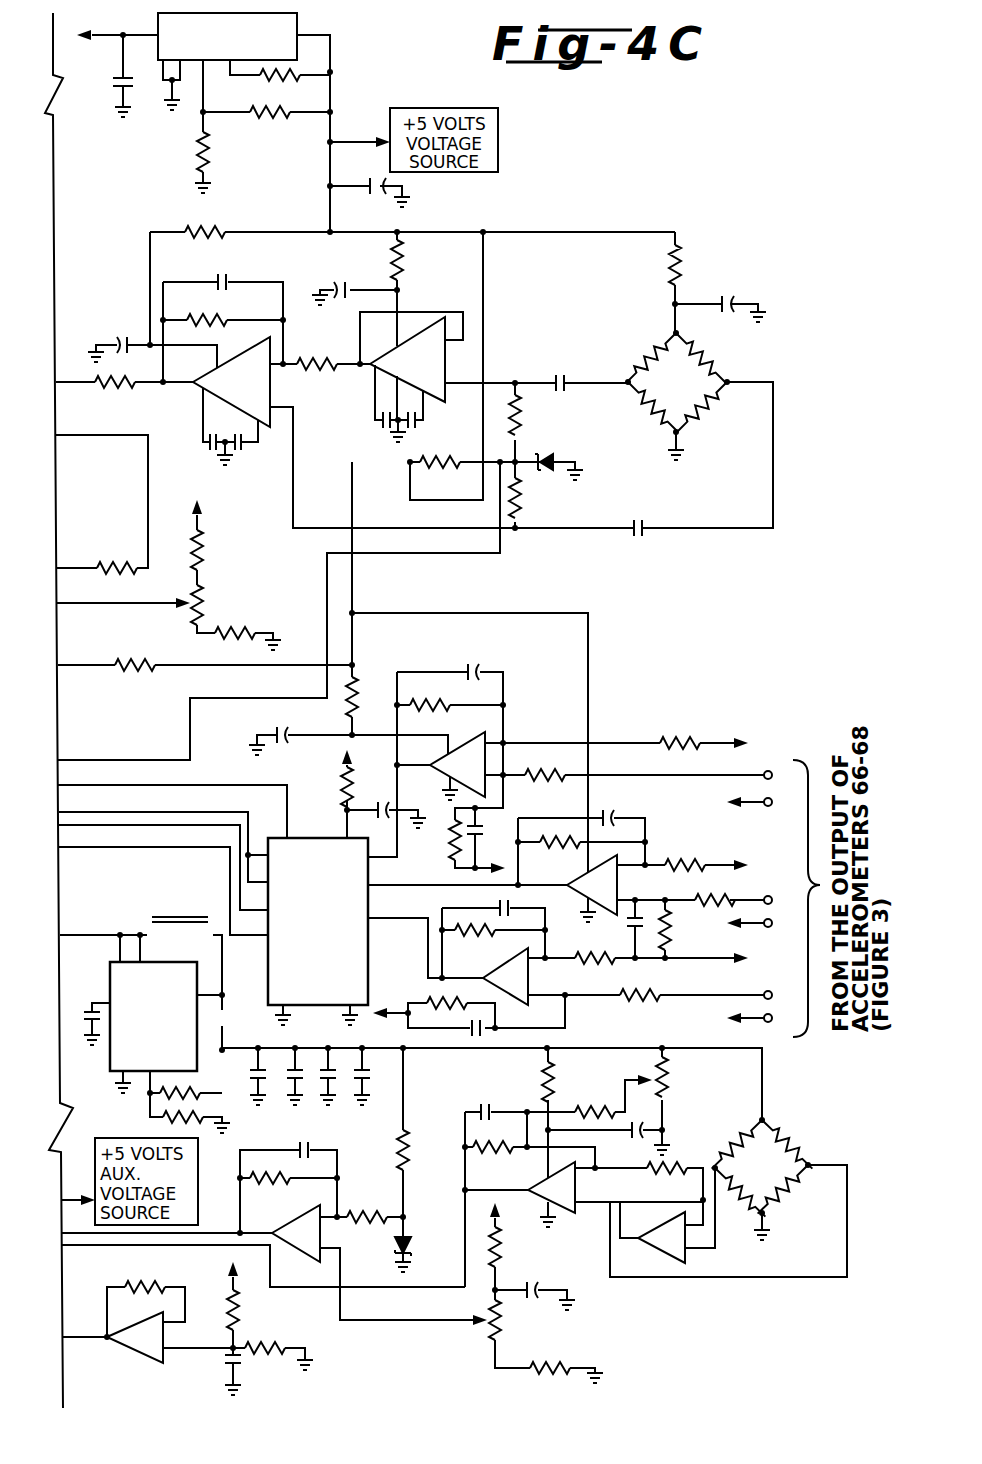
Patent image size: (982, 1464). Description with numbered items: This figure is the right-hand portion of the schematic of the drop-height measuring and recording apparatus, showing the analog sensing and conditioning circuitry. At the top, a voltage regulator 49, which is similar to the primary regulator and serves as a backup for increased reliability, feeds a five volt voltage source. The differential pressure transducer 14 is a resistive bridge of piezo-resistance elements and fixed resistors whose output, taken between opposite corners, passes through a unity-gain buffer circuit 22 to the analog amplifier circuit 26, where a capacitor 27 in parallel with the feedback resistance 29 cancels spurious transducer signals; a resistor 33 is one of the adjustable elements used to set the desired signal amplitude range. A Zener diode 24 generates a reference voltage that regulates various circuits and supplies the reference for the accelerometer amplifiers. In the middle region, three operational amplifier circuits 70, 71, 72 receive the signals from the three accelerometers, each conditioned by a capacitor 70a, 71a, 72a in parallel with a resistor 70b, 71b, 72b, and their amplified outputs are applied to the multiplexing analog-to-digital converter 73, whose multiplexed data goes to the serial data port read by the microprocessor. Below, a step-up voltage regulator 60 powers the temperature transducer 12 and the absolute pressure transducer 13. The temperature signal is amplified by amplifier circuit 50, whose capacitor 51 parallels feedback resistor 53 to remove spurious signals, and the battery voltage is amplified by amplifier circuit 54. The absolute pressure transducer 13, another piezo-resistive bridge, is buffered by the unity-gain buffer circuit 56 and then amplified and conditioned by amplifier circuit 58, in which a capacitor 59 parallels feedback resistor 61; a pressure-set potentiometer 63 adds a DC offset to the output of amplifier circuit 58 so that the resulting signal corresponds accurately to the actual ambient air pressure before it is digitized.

The voltage regulator 49 is at (333, 24).
The capacitor 27 is at (226, 280).
The feedback resistance 29 is at (210, 318).
The analog amplifier circuit 26 is at (254, 393).
The buffer circuit 22 is at (430, 377).
The differential pressure transducer 14 is at (651, 352).
The Zener diode 24 is at (550, 455).
The resistor 33 is at (205, 605).
The resistor 70b is at (428, 700).
The capacitor 70a is at (480, 671).
The operational amplifier circuit 70 is at (484, 778).
The multiplexing analog-to-digital converter 73 is at (305, 838).
The resistor 71b is at (550, 840).
The capacitor 71a is at (612, 818).
The operational amplifier circuit 71 is at (618, 898).
The capacitor 72a is at (495, 902).
The resistor 72b is at (492, 935).
The operational amplifier circuit 72 is at (530, 984).
The step-up voltage regulator 60 is at (110, 988).
The capacitor 59 is at (480, 1108).
The pressure-set potentiometer 63 is at (670, 1078).
The feedback resistor 61 is at (478, 1152).
The absolute pressure transducer 13 is at (790, 1150).
The capacitor 51 is at (318, 1152).
The feedback resistor 53 is at (285, 1185).
The amplifier circuit 50 is at (330, 1230).
The temperature transducer 12 is at (440, 1233).
The amplifier circuit 54 is at (145, 1343).
The amplifier circuit 58 is at (572, 1215).
The buffer circuit 56 is at (652, 1253).